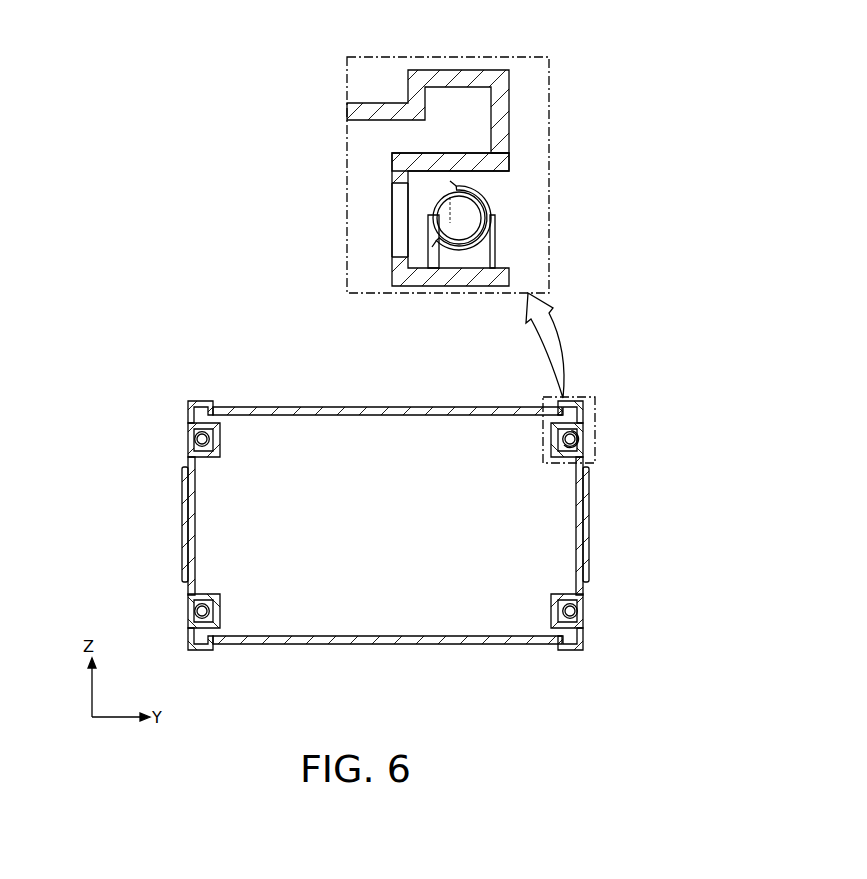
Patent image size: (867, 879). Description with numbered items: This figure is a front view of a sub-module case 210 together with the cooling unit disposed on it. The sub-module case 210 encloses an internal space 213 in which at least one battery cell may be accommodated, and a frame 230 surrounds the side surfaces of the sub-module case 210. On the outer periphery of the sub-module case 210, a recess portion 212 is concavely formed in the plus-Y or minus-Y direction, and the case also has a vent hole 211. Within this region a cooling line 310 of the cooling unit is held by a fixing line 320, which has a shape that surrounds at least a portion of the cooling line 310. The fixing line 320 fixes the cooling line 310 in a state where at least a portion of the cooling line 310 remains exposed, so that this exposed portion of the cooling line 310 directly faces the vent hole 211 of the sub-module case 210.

The sub-module case 210 is at (372, 113).
The vent hole 211 is at (403, 198).
The recess portion 212 is at (422, 198).
The internal space 213 is at (368, 140).
The frame 230 is at (182, 496).
The cooling line 310 is at (486, 218).
The fixing line 320 is at (485, 194).